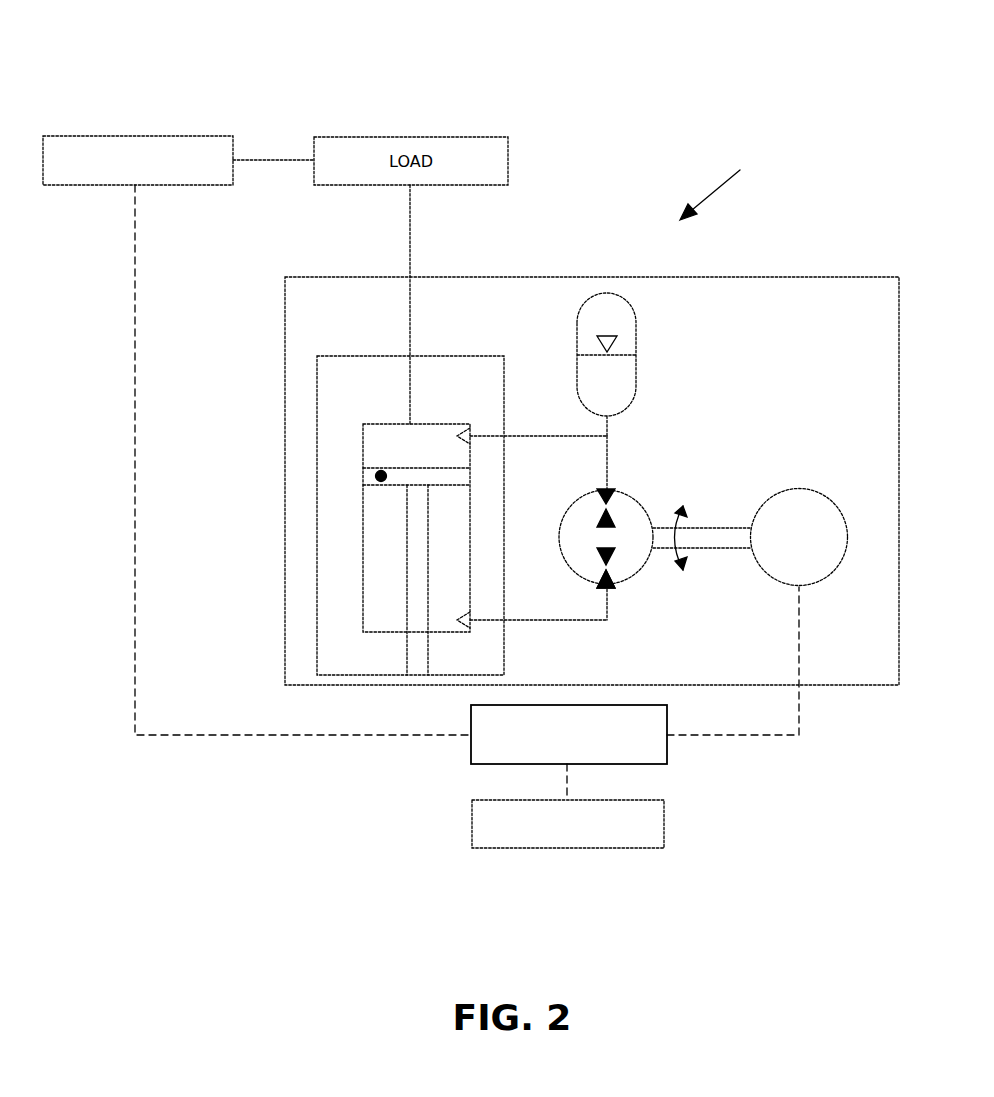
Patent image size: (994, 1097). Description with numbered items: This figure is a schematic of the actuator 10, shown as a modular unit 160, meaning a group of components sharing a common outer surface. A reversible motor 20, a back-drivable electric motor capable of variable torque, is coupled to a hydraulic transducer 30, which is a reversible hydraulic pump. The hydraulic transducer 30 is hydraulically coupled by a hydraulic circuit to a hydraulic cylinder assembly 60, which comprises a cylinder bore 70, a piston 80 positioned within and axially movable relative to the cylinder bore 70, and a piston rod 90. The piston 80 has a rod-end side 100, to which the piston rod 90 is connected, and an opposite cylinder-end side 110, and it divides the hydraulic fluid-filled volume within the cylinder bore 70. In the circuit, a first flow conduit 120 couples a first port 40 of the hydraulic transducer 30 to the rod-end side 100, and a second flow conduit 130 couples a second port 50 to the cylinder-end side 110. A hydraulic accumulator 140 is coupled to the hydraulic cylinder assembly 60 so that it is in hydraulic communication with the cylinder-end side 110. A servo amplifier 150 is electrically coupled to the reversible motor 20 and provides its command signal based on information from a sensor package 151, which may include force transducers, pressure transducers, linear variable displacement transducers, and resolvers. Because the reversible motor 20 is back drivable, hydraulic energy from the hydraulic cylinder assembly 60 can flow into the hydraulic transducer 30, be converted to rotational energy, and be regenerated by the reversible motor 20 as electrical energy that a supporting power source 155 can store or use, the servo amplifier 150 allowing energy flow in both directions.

The actuator 10 is at (733, 176).
The reversible motor 20 is at (810, 586).
The hydraulic transducer 30 is at (644, 510).
The first port 40 is at (607, 585).
The second port 50 is at (607, 490).
The hydraulic cylinder assembly 60 is at (318, 633).
The cylinder bore 70 is at (365, 500).
The piston 80 is at (381, 476).
The piston rod 90 is at (407, 565).
The rod-end side 100 is at (393, 486).
The cylinder-end side 110 is at (400, 468).
The first flow conduit 120 is at (568, 621).
The second flow conduit 130 is at (548, 436).
The hydraulic accumulator 140 is at (612, 292).
The servo amplifier 150 is at (663, 765).
The sensor package 151 is at (136, 136).
The power source 155 is at (640, 850).
The modular unit 160 is at (740, 277).